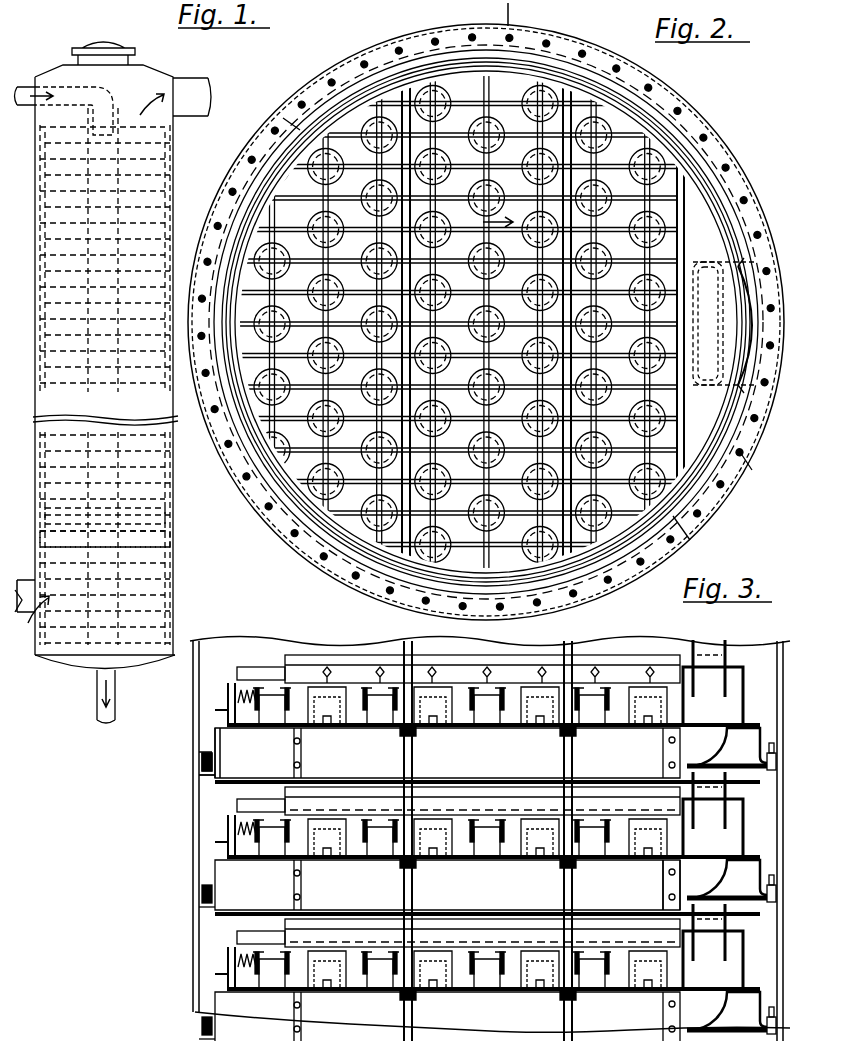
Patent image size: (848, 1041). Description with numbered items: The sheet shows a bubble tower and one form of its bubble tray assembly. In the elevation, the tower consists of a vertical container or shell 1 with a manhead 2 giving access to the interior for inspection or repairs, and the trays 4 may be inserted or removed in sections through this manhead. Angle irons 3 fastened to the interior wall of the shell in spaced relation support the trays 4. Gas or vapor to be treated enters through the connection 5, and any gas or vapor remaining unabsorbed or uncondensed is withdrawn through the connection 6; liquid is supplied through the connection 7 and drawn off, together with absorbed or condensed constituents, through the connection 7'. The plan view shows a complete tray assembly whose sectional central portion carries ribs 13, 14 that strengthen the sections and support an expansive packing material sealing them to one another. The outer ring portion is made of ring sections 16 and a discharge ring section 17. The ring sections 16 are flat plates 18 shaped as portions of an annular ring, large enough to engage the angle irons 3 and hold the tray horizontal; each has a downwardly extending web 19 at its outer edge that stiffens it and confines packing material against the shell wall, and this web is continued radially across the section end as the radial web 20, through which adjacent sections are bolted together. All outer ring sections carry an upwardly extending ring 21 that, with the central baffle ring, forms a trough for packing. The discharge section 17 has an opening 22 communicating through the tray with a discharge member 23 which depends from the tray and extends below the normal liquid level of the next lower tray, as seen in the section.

In FIG. 1, the shell 1 is at (178, 590).
In FIG. 2, the shell 1 is at (722, 514).
In FIG. 3, the shell 1 is at (194, 735).
In FIG. 1, the manhead 2 is at (78, 48).
In FIG. 1, the angle irons 3 is at (176, 540).
In FIG. 2, the angle irons 3 is at (790, 325).
In FIG. 3, the angle irons 3 is at (196, 787).
In FIG. 1, the trays 4 is at (178, 521).
In FIG. 1, the connection 5 is at (26, 626).
In FIG. 1, the connection 6 is at (198, 82).
In FIG. 1, the connection 7 is at (61, 98).
In FIG. 1, the connection 7' is at (75, 700).
In FIG. 3, the rib 13 is at (460, 856).
In FIG. 3, the rib 14 is at (412, 866).
In FIG. 2, the ring sections 16 is at (690, 548).
In FIG. 3, the ring sections 16 is at (457, 884).
In FIG. 2, the discharge ring section 17 is at (735, 444).
In FIG. 3, the discharge ring section 17 is at (651, 885).
In FIG. 3, the flat plates 18 is at (226, 732).
In FIG. 2, the web 19 is at (498, 125).
In FIG. 3, the web 19 is at (214, 765).
In FIG. 3, the radial web 20 is at (302, 757).
In FIG. 3, the ring 21 is at (232, 716).
In FIG. 2, the opening 22 is at (738, 386).
In FIG. 3, the opening 22 is at (758, 744).
In FIG. 2, the discharge member 23 is at (700, 262).
In FIG. 3, the discharge member 23 is at (729, 837).